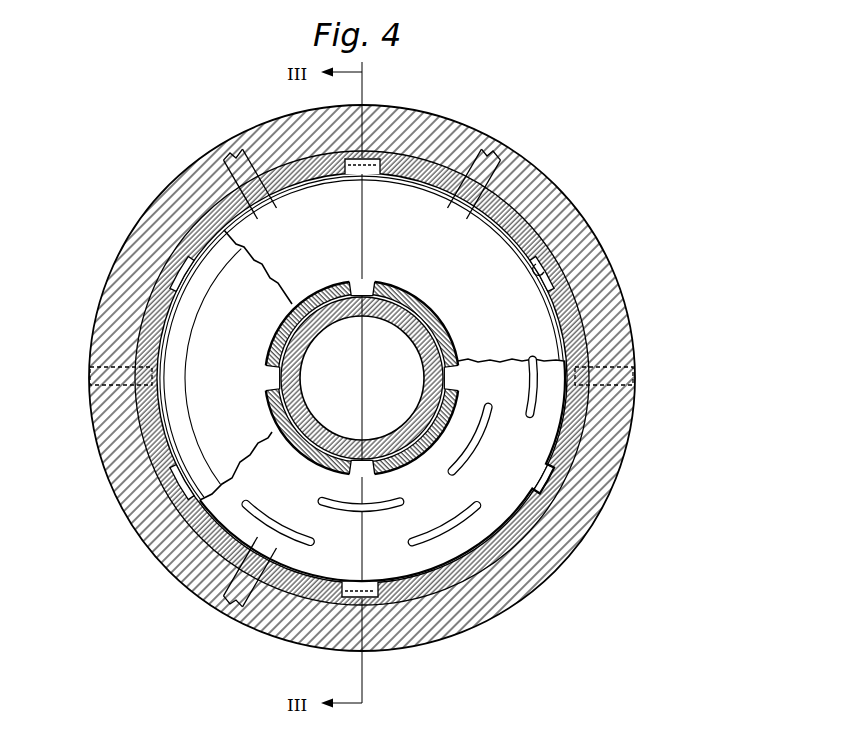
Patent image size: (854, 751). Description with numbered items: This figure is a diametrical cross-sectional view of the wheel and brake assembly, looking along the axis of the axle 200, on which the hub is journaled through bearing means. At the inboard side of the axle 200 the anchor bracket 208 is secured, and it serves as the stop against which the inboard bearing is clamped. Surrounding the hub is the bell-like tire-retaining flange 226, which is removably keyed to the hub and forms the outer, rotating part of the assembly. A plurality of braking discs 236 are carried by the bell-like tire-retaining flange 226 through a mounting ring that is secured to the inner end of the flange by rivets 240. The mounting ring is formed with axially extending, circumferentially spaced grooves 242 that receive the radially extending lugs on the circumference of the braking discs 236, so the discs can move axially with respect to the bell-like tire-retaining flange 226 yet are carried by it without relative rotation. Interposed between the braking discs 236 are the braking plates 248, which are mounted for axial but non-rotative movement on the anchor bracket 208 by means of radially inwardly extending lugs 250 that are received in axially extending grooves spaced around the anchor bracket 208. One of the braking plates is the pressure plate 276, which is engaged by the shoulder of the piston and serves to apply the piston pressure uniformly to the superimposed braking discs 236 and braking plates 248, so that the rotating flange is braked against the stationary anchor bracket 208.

The axle 200 is at (432, 347).
The anchor bracket 208 is at (419, 438).
The bell-like tire-retaining flange 226 is at (600, 292).
The braking discs 236 is at (505, 493).
The rivets 240 is at (503, 138).
The grooves 242 is at (542, 271).
The braking plates 248 is at (493, 270).
The radially inwardly extending lugs 250 is at (375, 286).
The pressure plate 276 is at (190, 416).